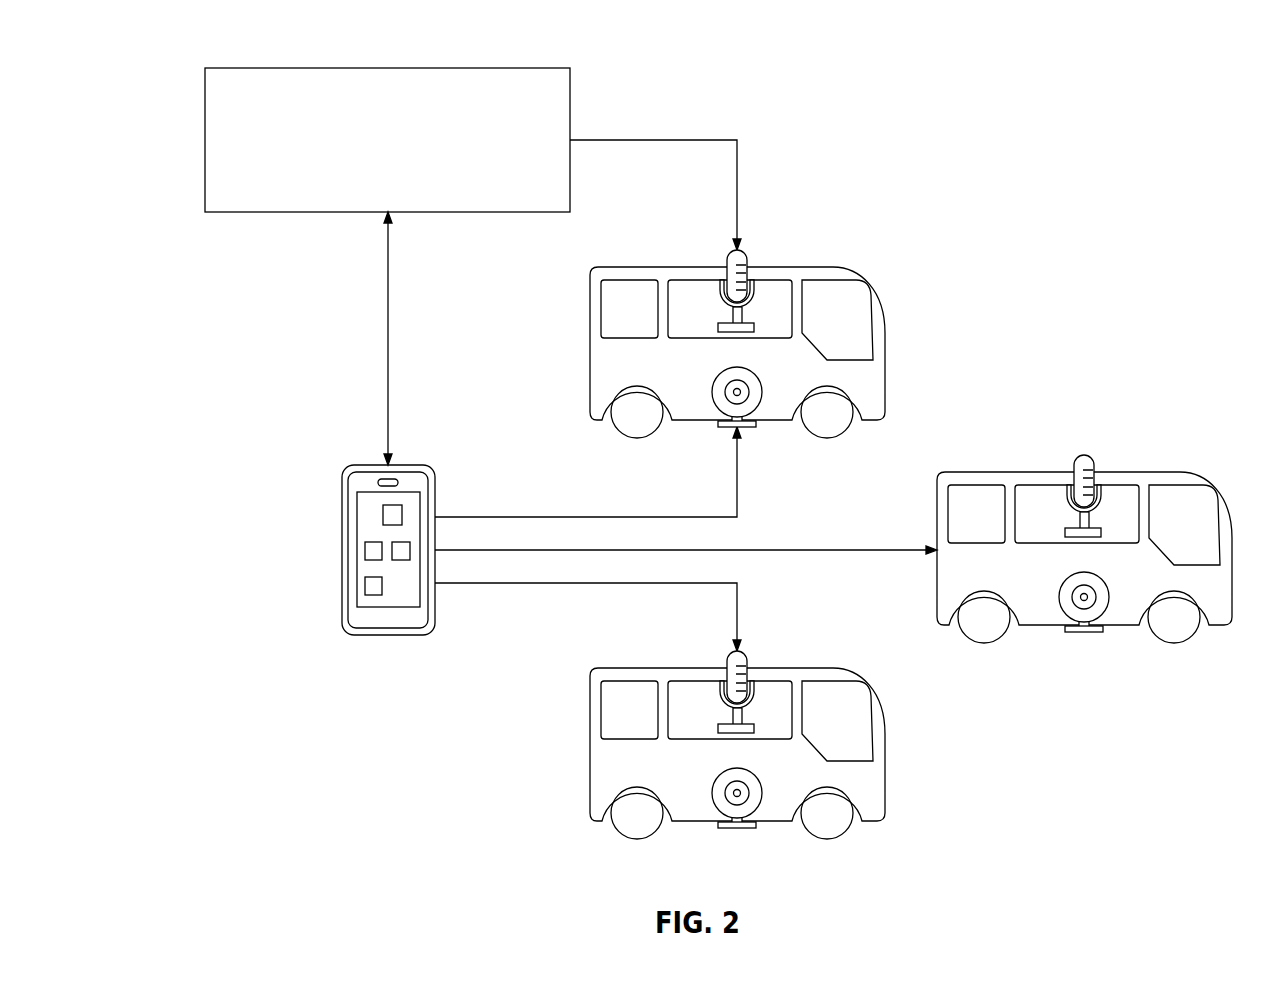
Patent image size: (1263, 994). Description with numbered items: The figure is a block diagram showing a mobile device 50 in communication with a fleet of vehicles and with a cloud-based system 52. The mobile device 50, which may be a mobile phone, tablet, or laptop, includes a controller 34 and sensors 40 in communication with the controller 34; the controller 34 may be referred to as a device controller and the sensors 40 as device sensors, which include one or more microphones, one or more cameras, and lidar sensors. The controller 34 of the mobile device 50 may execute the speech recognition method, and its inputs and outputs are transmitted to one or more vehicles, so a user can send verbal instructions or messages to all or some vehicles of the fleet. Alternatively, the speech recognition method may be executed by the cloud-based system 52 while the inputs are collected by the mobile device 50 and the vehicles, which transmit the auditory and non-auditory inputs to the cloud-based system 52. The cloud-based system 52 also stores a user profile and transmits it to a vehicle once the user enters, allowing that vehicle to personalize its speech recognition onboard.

The controller 34 is at (402, 515).
The sensors 40 is at (403, 560).
The mobile device 50 is at (342, 508).
The cloud-based system 52 is at (258, 68).